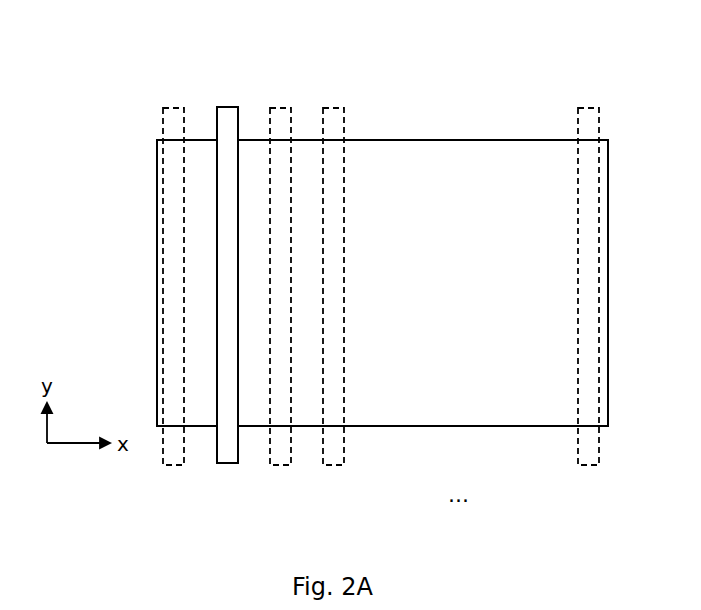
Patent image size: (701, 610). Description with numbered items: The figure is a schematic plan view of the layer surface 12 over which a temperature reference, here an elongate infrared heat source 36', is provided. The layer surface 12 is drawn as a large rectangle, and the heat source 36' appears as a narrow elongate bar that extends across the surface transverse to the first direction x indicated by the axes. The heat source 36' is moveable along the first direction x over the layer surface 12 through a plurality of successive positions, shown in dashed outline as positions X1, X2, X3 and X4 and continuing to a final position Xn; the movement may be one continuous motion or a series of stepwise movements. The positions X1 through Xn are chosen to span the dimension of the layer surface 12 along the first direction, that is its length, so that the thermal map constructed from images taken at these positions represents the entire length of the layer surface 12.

The layer surface 12 is at (157, 203).
The elongate infrared heat source 36' is at (184, 243).
The first position X1 is at (172, 307).
The second position X2 is at (230, 307).
The third position X3 is at (278, 307).
The fourth position X4 is at (339, 307).
The n-th position Xn is at (589, 307).